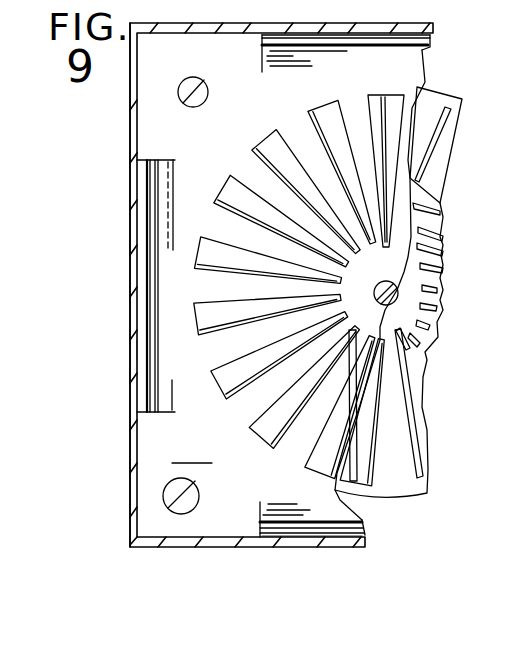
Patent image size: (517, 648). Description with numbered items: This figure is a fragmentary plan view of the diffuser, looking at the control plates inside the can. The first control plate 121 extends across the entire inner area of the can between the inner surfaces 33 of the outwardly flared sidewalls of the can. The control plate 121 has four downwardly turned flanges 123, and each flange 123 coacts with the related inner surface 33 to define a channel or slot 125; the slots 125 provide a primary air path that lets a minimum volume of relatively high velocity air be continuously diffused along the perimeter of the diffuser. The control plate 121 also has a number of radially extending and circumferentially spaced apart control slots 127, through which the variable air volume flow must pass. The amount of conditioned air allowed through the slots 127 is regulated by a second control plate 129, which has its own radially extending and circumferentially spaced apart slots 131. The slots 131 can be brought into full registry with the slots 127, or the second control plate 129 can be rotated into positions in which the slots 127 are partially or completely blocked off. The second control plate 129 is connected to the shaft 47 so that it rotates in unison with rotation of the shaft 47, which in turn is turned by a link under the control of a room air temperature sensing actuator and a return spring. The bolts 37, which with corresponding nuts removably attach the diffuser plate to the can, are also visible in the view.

The inner surface 33 is at (137, 247).
The bolt 37 is at (199, 496).
The shaft 47 is at (390, 274).
The first control plate 121 is at (193, 450).
The downwardly turned flange 123 is at (150, 210).
The slot 125 is at (140, 342).
The control slot 127 is at (282, 140).
The second control plate 129 is at (408, 483).
The slot 131 is at (227, 180).